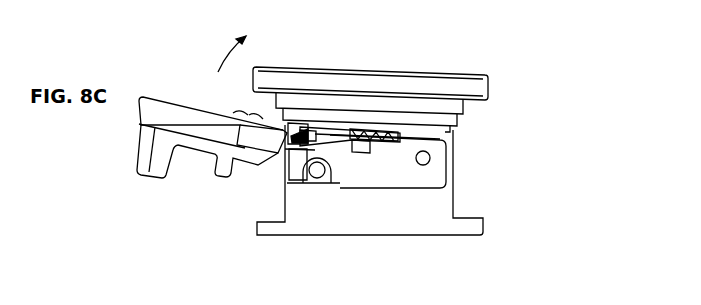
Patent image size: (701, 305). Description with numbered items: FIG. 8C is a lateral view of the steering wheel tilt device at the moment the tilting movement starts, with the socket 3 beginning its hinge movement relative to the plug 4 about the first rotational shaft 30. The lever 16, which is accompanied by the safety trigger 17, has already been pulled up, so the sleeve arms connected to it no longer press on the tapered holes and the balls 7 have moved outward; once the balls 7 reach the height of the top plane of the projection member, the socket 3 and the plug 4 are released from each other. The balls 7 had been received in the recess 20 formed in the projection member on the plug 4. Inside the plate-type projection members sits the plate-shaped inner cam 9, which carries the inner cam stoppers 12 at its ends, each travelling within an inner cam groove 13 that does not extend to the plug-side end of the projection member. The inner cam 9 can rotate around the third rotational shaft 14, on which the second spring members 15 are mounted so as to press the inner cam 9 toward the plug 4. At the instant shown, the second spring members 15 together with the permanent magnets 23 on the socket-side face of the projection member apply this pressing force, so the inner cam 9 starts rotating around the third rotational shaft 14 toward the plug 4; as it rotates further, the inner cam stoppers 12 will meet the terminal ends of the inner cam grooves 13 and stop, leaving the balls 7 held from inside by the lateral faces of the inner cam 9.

The socket 3 is at (450, 82).
The plug 4 is at (422, 228).
The balls 7 is at (348, 138).
The inner cam 9 is at (354, 140).
The inner cam stoppers 12 is at (312, 137).
The inner cam grooves 13 is at (295, 128).
The third rotational shaft 14 is at (445, 128).
The second spring members 15 is at (387, 130).
The lever 16 is at (167, 108).
The safety trigger 17 is at (139, 163).
The recess 20 is at (317, 173).
The permanent magnets 23 is at (293, 160).
The first rotational shaft 30 is at (430, 158).